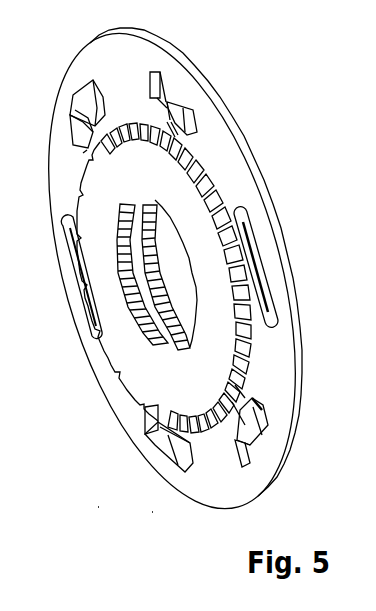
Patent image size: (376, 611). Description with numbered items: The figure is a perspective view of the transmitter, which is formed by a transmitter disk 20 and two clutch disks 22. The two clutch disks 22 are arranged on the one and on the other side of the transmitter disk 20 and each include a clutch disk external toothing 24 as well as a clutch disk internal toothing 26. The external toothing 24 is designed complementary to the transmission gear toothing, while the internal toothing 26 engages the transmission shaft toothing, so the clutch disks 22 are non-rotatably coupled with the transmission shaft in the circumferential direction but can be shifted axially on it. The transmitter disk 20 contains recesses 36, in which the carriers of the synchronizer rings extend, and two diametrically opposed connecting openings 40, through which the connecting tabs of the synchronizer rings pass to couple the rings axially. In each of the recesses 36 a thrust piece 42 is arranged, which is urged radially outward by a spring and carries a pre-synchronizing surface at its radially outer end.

The transmitter disk 20 is at (236, 140).
The clutch disk 22 is at (142, 380).
The clutch disk external toothing 24 is at (200, 168).
The clutch disk internal toothing 26 is at (132, 318).
The recess 36 is at (90, 96).
The connecting opening 40 is at (262, 272).
The thrust piece 42 is at (163, 103).